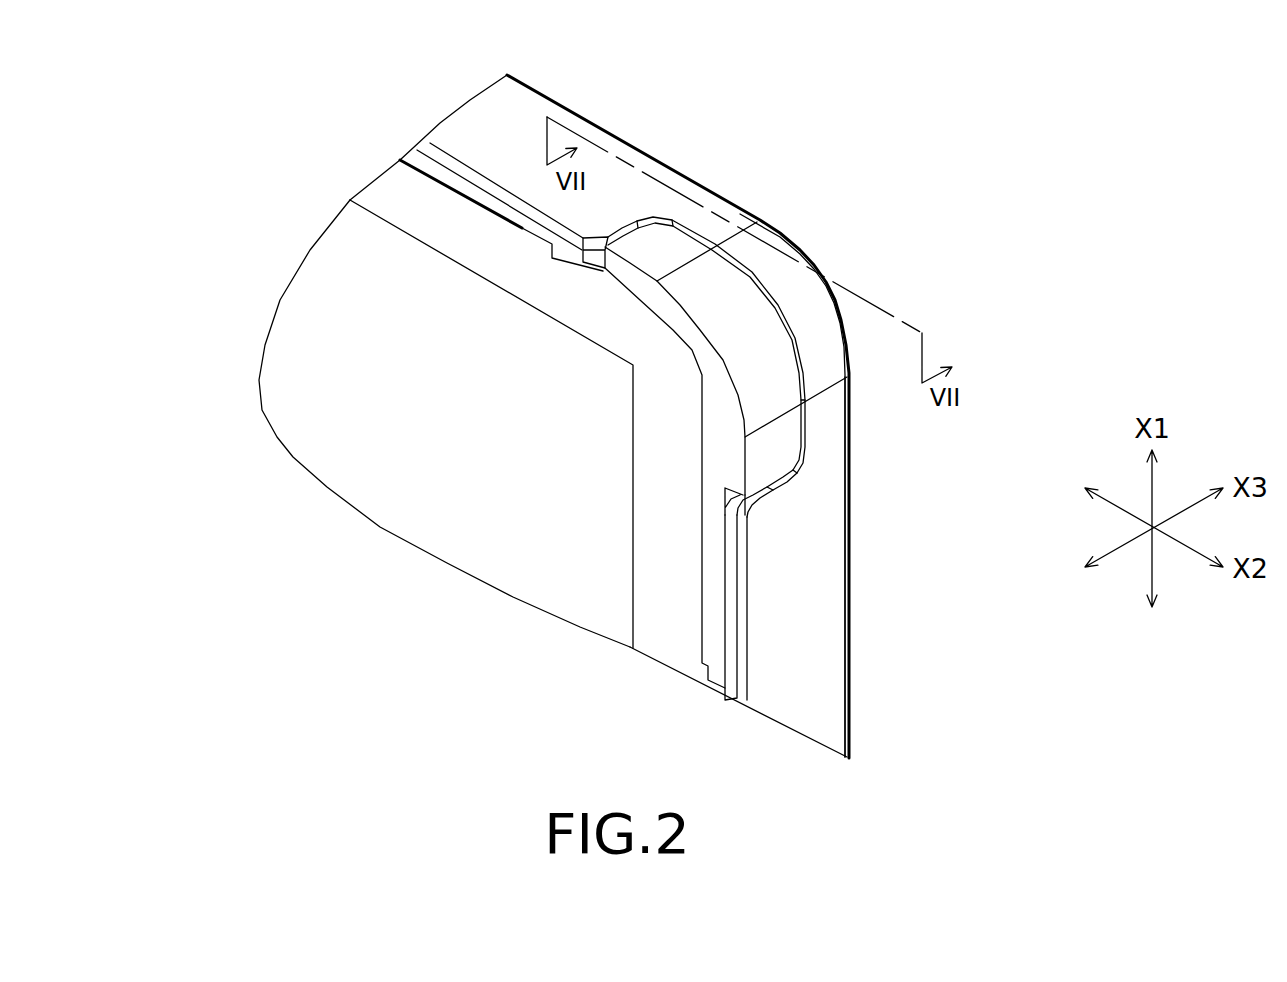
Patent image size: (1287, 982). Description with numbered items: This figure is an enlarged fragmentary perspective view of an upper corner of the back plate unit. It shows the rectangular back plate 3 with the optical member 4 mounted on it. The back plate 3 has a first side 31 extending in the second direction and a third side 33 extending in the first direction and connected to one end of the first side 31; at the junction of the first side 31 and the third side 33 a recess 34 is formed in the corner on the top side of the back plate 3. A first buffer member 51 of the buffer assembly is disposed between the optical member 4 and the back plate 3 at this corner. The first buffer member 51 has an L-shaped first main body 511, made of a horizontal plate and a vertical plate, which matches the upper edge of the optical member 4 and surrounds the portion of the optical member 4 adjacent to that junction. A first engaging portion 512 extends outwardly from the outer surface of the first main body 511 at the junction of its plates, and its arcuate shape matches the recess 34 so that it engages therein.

The back plate 3 is at (858, 562).
The first side 31 is at (495, 130).
The third side 33 is at (810, 600).
The recess 34 is at (777, 489).
The optical member 4 is at (337, 405).
The first buffer member 51 is at (760, 340).
The first main body 511 is at (710, 632).
The first engaging portion 512 is at (715, 293).